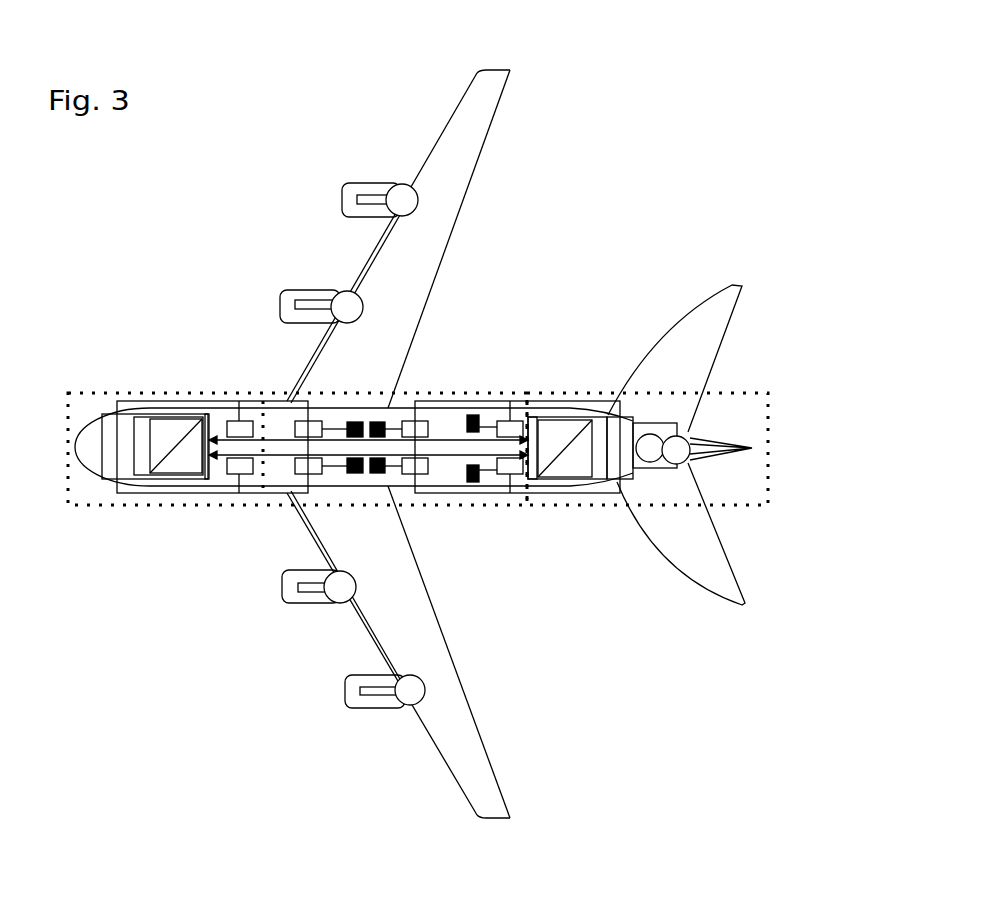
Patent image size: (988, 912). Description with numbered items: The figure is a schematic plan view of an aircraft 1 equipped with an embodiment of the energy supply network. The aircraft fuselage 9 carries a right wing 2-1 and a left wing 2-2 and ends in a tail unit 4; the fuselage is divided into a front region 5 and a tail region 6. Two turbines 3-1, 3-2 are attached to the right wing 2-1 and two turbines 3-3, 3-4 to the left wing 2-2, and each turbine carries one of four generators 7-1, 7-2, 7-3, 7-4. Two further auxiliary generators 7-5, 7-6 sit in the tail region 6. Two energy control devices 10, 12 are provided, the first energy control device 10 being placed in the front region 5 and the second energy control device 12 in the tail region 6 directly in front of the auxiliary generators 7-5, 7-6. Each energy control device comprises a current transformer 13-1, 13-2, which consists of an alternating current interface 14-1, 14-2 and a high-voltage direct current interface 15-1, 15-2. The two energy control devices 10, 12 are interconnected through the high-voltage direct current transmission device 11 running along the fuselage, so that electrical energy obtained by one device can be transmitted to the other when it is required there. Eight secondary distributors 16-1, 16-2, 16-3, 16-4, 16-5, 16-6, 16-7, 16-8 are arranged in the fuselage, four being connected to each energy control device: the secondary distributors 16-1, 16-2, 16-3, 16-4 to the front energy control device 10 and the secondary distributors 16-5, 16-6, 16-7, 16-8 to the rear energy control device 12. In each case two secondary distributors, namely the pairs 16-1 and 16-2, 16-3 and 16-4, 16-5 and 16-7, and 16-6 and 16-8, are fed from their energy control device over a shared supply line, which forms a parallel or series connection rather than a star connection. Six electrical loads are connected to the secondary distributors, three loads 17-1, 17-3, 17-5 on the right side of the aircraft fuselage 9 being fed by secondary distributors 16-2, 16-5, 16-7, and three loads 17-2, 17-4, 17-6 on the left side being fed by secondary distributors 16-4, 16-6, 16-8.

The aircraft 1 is at (560, 140).
The right wing 2-1 is at (475, 120).
The left wing 2-2 is at (478, 777).
The turbine 3-1 is at (348, 188).
The turbine 3-2 is at (283, 293).
The turbine 3-3 is at (297, 595).
The turbine 3-4 is at (360, 700).
The tail unit 4 is at (728, 308).
The front region 5 is at (83, 488).
The tail region 6 is at (760, 495).
The generator 7-1 is at (345, 298).
The generator 7-2 is at (400, 197).
The generator 7-3 is at (345, 592).
The generator 7-4 is at (403, 698).
The auxiliary generator 7-5 is at (645, 432).
The auxiliary generator 7-6 is at (683, 462).
The aircraft fuselage 9 is at (391, 418).
The energy control device 10 is at (107, 445).
The high-voltage direct current transmission device 11 is at (437, 441).
The energy control device 12 is at (620, 468).
The current transformer 13-1 is at (137, 427).
The current transformer 13-2 is at (598, 422).
The alternating current interface 14-1 is at (183, 430).
The alternating current interface 14-2 is at (575, 468).
The high-voltage direct current interface 15-1 is at (188, 465).
The high-voltage direct current interface 15-2 is at (548, 430).
The secondary distributor 16-1 is at (233, 430).
The secondary distributor 16-2 is at (307, 428).
The secondary distributor 16-3 is at (240, 468).
The secondary distributor 16-4 is at (307, 467).
The secondary distributor 16-5 is at (413, 422).
The secondary distributor 16-6 is at (410, 468).
The secondary distributor 16-7 is at (510, 422).
The secondary distributor 16-8 is at (510, 473).
The electrical load 17-1 is at (352, 422).
The electrical load 17-2 is at (356, 472).
The electrical load 17-3 is at (374, 422).
The electrical load 17-4 is at (380, 473).
The electrical load 17-5 is at (479, 414).
The electrical load 17-6 is at (478, 483).